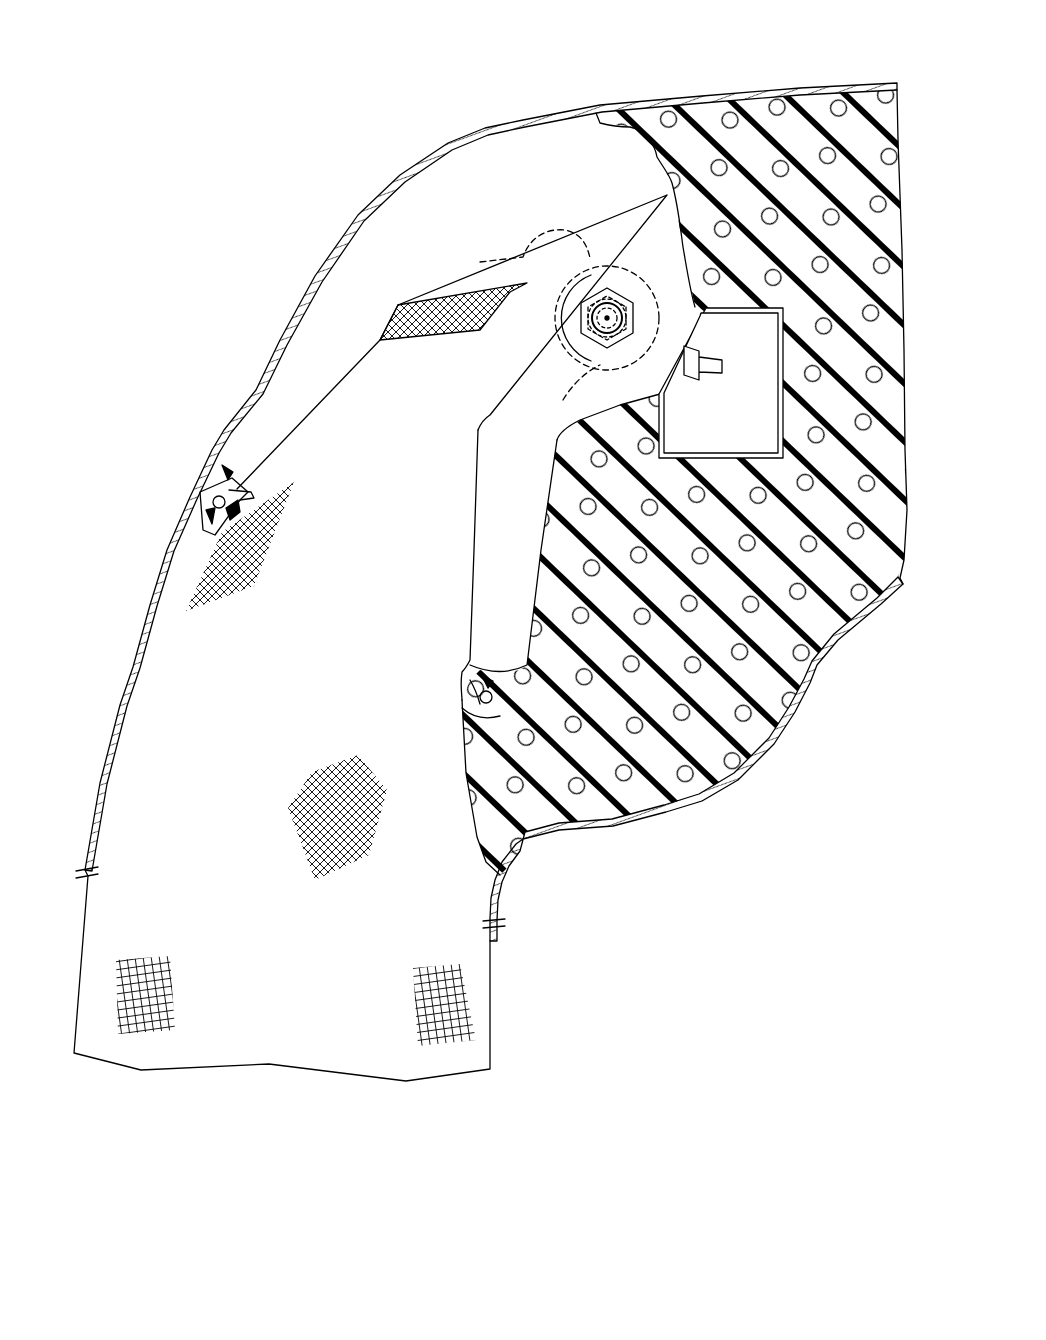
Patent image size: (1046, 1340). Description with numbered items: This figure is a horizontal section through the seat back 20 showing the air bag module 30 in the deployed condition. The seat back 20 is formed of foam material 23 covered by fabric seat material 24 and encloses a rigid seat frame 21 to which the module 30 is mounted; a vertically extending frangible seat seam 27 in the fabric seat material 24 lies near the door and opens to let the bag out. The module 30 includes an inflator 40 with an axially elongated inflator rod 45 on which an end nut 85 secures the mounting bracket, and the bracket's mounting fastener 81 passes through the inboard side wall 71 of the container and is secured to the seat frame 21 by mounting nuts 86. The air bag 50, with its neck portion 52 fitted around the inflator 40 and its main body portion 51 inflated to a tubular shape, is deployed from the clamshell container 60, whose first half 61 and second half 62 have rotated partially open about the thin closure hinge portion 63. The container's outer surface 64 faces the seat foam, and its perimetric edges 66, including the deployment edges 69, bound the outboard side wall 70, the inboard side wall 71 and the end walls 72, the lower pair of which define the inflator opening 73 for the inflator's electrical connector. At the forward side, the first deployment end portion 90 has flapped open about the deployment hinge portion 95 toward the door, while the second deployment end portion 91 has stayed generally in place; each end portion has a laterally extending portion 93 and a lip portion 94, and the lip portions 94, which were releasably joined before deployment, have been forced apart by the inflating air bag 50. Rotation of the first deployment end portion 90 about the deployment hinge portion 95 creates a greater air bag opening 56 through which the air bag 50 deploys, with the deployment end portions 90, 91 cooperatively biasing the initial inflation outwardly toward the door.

The seat back 20 is at (660, 86).
The seat frame 21 is at (783, 437).
The foam material 23 is at (897, 122).
The fabric seat material 24 is at (580, 105).
The frangible seat seam 27 is at (84, 864).
The air bag module 30 is at (455, 150).
The inflator 40 is at (558, 325).
The inflator rod 45 is at (590, 323).
The air bag 50 is at (349, 1070).
The main body portion 51 is at (215, 1040).
The neck portion 52 is at (563, 275).
The air bag opening 56 is at (387, 559).
The clamshell container 60 is at (430, 194).
The first half 61 is at (405, 210).
The second half 62 is at (546, 538).
The closure hinge portion 63 is at (676, 181).
The outer surface 64 is at (297, 335).
The perimetric edges 66 is at (340, 408).
The deployment edges 69 is at (215, 522).
The outboard side wall 70 is at (322, 278).
The inboard side wall 71 is at (548, 516).
The end walls 72 is at (484, 154).
The inflator opening 73 is at (480, 262).
The mounting fastener 81 is at (724, 366).
The end nut 85 is at (601, 293).
The mounting nuts 86 is at (690, 378).
The first deployment end portion 90 is at (208, 534).
The second deployment end portion 91 is at (462, 726).
The laterally extending portion 93 is at (229, 504).
The lip portion 94 is at (220, 522).
The deployment hinge portion 95 is at (196, 452).